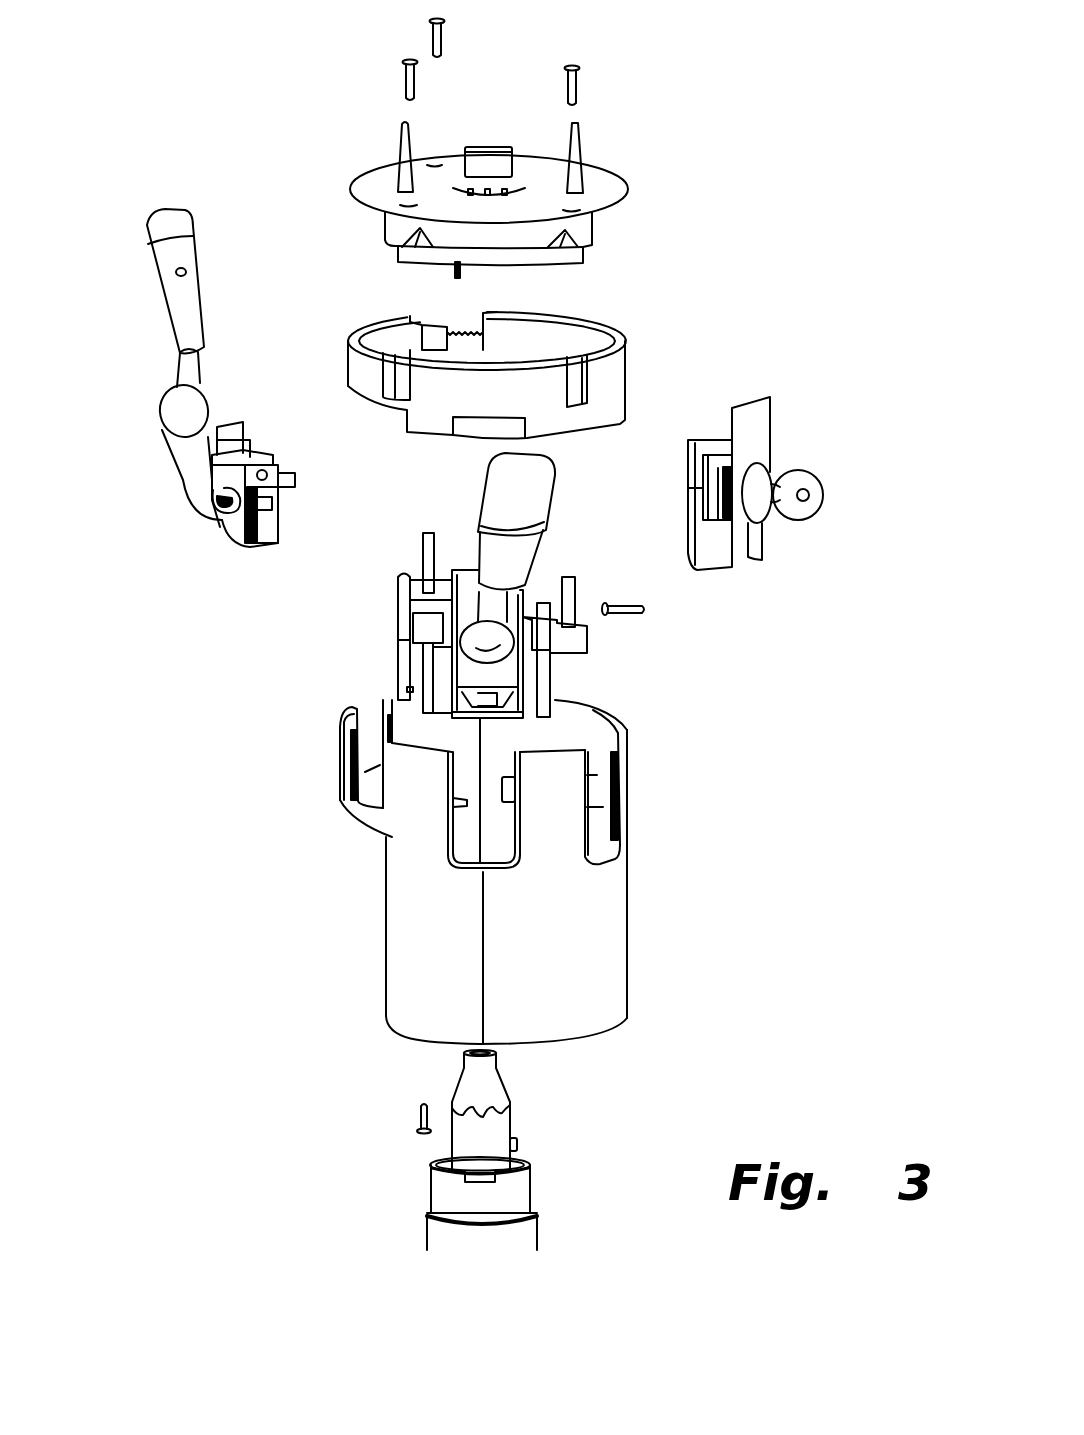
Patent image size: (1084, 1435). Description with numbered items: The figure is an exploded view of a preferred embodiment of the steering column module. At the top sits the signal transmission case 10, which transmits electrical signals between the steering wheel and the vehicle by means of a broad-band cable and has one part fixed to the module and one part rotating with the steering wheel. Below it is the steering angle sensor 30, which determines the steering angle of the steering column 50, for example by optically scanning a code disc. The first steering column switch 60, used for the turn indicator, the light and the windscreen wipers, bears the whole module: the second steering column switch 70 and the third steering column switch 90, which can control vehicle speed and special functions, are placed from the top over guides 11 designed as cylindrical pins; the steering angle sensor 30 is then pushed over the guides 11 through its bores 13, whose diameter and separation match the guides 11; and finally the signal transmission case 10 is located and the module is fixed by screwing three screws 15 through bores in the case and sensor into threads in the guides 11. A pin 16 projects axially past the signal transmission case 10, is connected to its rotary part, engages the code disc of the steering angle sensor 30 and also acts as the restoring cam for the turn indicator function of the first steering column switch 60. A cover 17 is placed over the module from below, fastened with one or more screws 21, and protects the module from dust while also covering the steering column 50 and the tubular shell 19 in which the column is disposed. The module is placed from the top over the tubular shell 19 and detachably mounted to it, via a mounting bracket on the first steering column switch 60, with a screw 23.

The signal transmission case 10 is at (362, 170).
The guides 11 is at (563, 573).
The bores 13 is at (393, 357).
The screws 15 is at (414, 82).
The pin 16 is at (455, 273).
The cover 17 is at (383, 963).
The tubular shell 19 is at (533, 1197).
The screws 21 is at (413, 1125).
The screw 23 is at (648, 613).
The steering angle sensor 30 is at (632, 342).
The steering column 50 is at (513, 1098).
The first steering column switch 60 is at (393, 666).
The second steering column switch 70 is at (193, 510).
The third steering column switch 90 is at (750, 561).